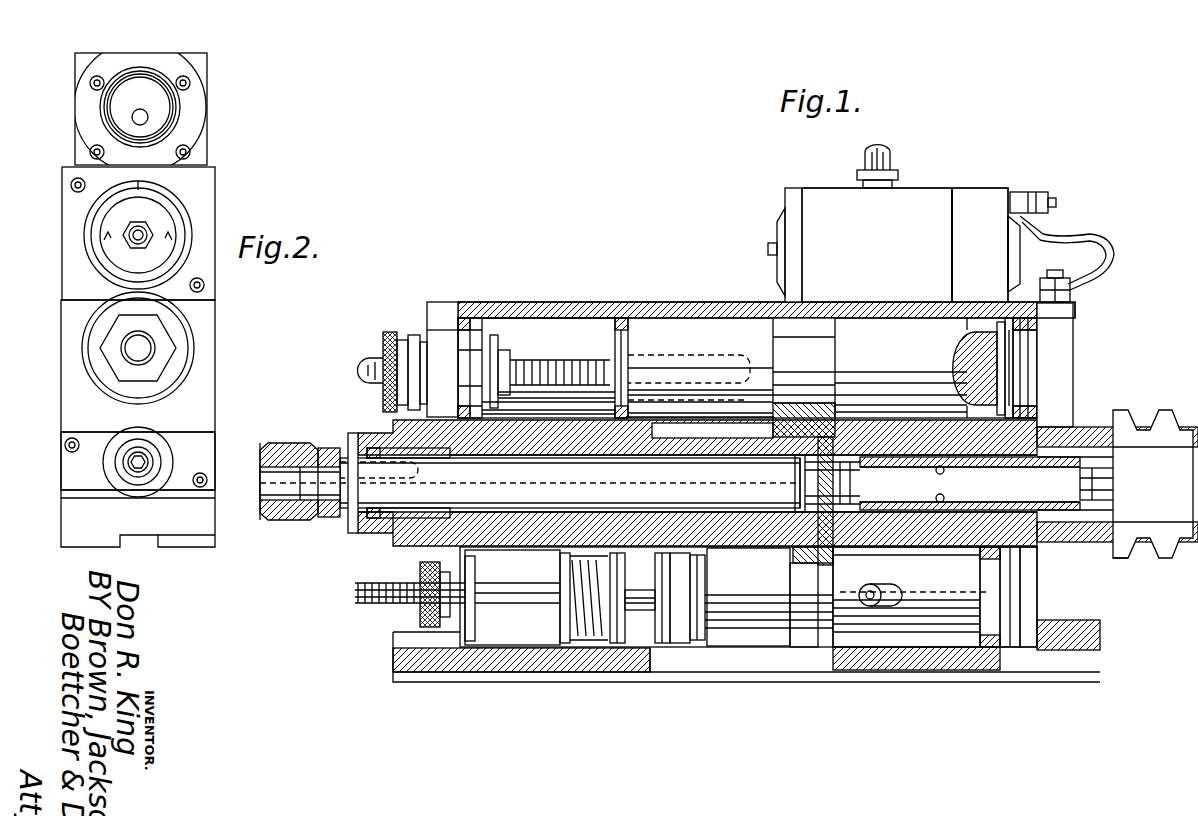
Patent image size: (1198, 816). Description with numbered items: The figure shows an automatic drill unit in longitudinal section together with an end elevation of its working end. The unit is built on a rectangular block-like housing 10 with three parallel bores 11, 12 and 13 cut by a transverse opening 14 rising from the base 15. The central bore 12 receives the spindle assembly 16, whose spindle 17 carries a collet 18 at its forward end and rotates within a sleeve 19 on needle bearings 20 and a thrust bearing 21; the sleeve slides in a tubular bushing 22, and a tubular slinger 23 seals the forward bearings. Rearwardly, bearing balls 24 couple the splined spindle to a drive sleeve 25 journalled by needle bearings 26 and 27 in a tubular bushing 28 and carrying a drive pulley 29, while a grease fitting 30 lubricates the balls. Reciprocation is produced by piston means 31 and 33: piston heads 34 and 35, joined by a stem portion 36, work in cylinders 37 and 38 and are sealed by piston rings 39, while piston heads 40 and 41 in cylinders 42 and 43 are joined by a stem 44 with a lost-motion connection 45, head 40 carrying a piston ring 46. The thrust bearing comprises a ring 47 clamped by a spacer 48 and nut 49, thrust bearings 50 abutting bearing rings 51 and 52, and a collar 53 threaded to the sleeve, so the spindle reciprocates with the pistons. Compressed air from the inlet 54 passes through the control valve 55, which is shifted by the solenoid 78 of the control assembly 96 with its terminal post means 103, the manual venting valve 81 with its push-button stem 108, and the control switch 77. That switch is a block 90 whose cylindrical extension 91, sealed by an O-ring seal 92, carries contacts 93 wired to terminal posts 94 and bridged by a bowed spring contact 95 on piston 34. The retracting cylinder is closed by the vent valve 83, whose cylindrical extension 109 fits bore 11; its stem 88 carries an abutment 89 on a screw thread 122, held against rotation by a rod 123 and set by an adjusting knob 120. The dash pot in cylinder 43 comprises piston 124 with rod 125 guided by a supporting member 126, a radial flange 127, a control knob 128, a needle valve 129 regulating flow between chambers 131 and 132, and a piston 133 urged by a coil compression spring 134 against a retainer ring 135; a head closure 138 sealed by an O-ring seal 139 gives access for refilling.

In FIG. 2, the housing 10 is at (224, 388).
In FIG. 1, the housing 10 is at (660, 302).
In FIG. 1, the bore 11 is at (580, 320).
In FIG. 1, the central bore 12 is at (652, 431).
In FIG. 1, the bore 13 is at (520, 652).
In FIG. 1, the transverse opening 14 is at (790, 680).
In FIG. 2, the base 15 is at (196, 540).
In FIG. 1, the base 15 is at (606, 656).
In FIG. 1, the spindle assembly 16 is at (333, 555).
In FIG. 1, the spindle 17 is at (498, 478).
In FIG. 2, the collet 18 is at (166, 358).
In FIG. 1, the collet 18 is at (290, 522).
In FIG. 1, the sleeve 19 is at (524, 452).
In FIG. 1, the needle bearings 20 is at (414, 506).
In FIG. 1, the thrust bearing 21 is at (777, 470).
In FIG. 1, the tubular bushing 22 is at (402, 544).
In FIG. 2, the tubular slinger 23 is at (195, 331).
In FIG. 1, the tubular slinger 23 is at (354, 535).
In FIG. 1, the bearing balls 24 is at (970, 483).
In FIG. 1, the drive sleeve 25 is at (1160, 540).
In FIG. 1, the needle bearing 26 is at (970, 484).
In FIG. 1, the needle bearing 27 is at (1072, 492).
In FIG. 1, the tubular bushing 28 is at (1080, 434).
In FIG. 1, the drive pulley 29 is at (1165, 428).
In FIG. 1, the grease fitting 30 is at (1130, 484).
In FIG. 1, the piston means 31 is at (722, 312).
In FIG. 1, the piston means 33 is at (848, 640).
In FIG. 1, the piston head 34 is at (898, 354).
In FIG. 1, the piston head 35 is at (700, 350).
In FIG. 1, the stem portion 36 is at (812, 366).
In FIG. 1, the advancing cylinder 37 is at (1000, 330).
In FIG. 1, the retracting cylinder 38 is at (556, 330).
In FIG. 1, the piston ring 39 is at (620, 325).
In FIG. 1, the piston head 40 is at (952, 578).
In FIG. 1, the piston head 41 is at (760, 590).
In FIG. 1, the cylinder 42 is at (1022, 606).
In FIG. 1, the cylinder 43 is at (482, 648).
In FIG. 1, the stem 44 is at (812, 622).
In FIG. 1, the lost-motion connection 45 is at (880, 590).
In FIG. 1, the piston ring 46 is at (982, 586).
In FIG. 1, the ring 47 is at (832, 481).
In FIG. 1, the spacer 48 is at (835, 483).
In FIG. 1, the nut 49 is at (850, 547).
In FIG. 1, the thrust bearings 50 is at (813, 555).
In FIG. 1, the bearing ring 51 is at (800, 498).
In FIG. 1, the bearing ring 52 is at (836, 410).
In FIG. 1, the collar 53 is at (772, 440).
In FIG. 1, the inlet 54 is at (882, 165).
In FIG. 1, the control valve 55 is at (926, 196).
In FIG. 1, the control switch 77 is at (1085, 331).
In FIG. 1, the solenoid 78 is at (982, 196).
In FIG. 1, the manual venting valve 81 is at (790, 203).
In FIG. 2, the vent valve 83 is at (200, 190).
In FIG. 1, the vent valve 83 is at (440, 302).
In FIG. 1, the stem 88 is at (464, 366).
In FIG. 1, the abutment 89 is at (498, 346).
In FIG. 1, the block 90 is at (1074, 376).
In FIG. 1, the cylindrical extension 91 is at (1010, 386).
In FIG. 1, the O-ring seal 92 is at (1016, 406).
In FIG. 1, the contacts 93 is at (1006, 346).
In FIG. 1, the terminal posts 94 is at (1054, 277).
In FIG. 1, the bowed spring contact 95 is at (975, 386).
In FIG. 2, the control assembly 96 is at (222, 94).
In FIG. 1, the control assembly 96 is at (836, 178).
In FIG. 1, the terminal post means 103 is at (1050, 202).
In FIG. 2, the stem 108 is at (148, 118).
In FIG. 1, the stem 108 is at (770, 250).
In FIG. 1, the cylindrical extension 109 is at (474, 330).
In FIG. 2, the adjusting knob 120 is at (176, 222).
In FIG. 1, the adjusting knob 120 is at (392, 340).
In FIG. 1, the screw thread 122 is at (550, 370).
In FIG. 1, the rod 123 is at (520, 410).
In FIG. 1, the piston 124 is at (704, 566).
In FIG. 2, the rod 125 is at (128, 456).
In FIG. 1, the rod 125 is at (512, 597).
In FIG. 2, the supporting member 126 is at (196, 452).
In FIG. 1, the supporting member 126 is at (470, 562).
In FIG. 1, the radial flange 127 is at (474, 582).
In FIG. 2, the control knob 128 is at (150, 440).
In FIG. 1, the control knob 128 is at (410, 621).
In FIG. 2, the needle valve 129 is at (132, 470).
In FIG. 1, the chamber 131 is at (698, 644).
In FIG. 1, the chamber 132 is at (660, 575).
In FIG. 1, the piston 133 is at (628, 622).
In FIG. 1, the coil compression spring 134 is at (572, 582).
In FIG. 1, the retainer ring 135 is at (560, 622).
In FIG. 1, the head closure 138 is at (1012, 590).
In FIG. 1, the O-ring seal 139 is at (1002, 566).